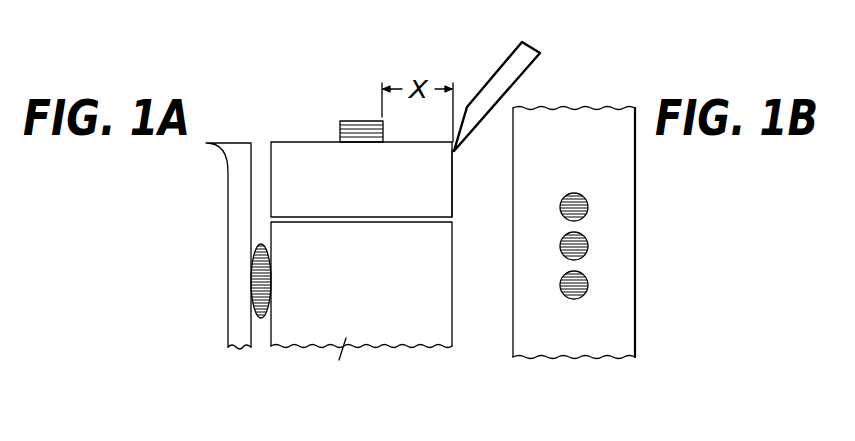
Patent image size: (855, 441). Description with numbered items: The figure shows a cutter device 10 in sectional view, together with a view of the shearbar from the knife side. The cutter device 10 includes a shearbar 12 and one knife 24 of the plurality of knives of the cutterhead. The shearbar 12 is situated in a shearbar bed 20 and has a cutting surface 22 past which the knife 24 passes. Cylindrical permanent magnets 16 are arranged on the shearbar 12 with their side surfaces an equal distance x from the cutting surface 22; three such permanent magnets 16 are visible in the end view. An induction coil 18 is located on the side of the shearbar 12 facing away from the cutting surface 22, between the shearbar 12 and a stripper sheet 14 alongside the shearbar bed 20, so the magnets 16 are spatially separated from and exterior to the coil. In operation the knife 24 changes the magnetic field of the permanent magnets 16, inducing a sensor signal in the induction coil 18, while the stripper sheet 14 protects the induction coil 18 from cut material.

In FIG. 1A, the cutter device 10 is at (213, 365).
In FIG. 1A, the shearbar 12 is at (376, 196).
In FIG. 1A, the stripper sheet 14 is at (228, 227).
In FIG. 1A, the permanent magnets 16 is at (343, 119).
In FIG. 1B, the permanent magnets 16 is at (588, 278).
In FIG. 1A, the induction coil 18 is at (258, 262).
In FIG. 1A, the shearbar bed 20 is at (345, 344).
In FIG. 1A, the cutting surface 22 is at (452, 198).
In FIG. 1A, the knife 24 is at (529, 45).